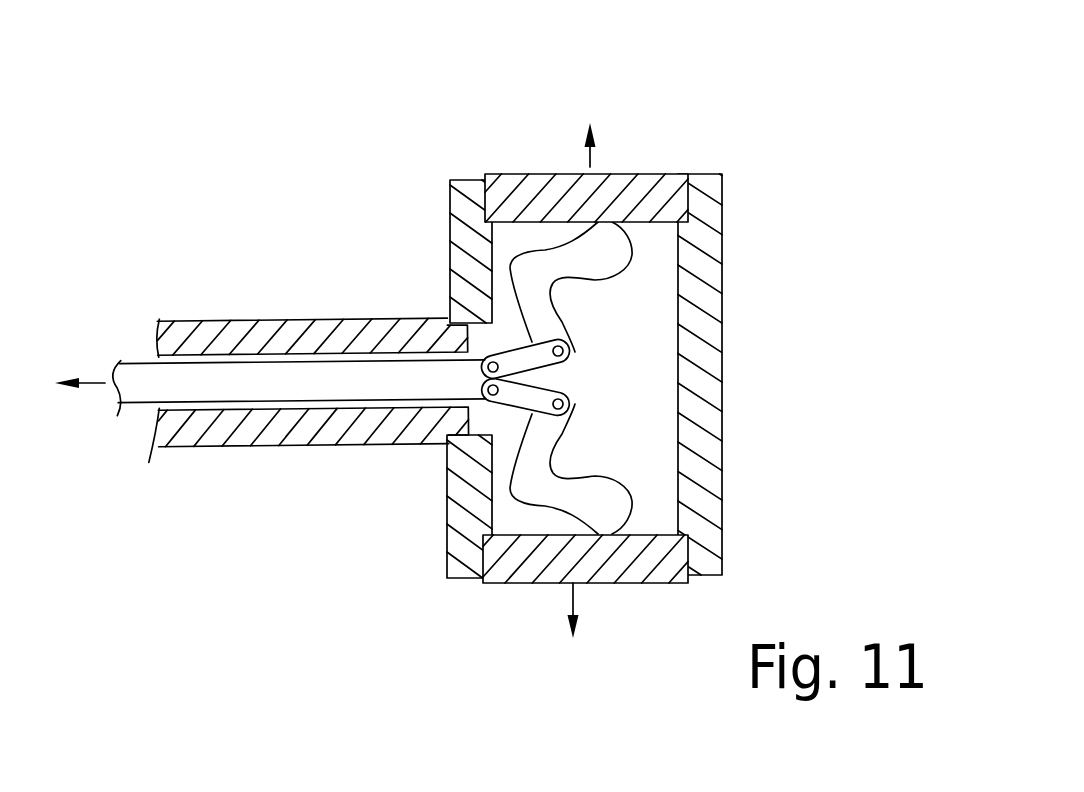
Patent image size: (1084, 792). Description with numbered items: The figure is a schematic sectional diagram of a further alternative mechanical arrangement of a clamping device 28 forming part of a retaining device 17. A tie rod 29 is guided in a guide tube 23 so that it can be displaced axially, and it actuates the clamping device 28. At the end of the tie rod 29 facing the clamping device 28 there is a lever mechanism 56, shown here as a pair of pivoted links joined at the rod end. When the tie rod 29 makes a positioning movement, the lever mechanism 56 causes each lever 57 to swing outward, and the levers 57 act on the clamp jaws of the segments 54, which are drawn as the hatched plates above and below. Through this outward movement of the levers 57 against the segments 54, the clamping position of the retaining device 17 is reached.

The retaining device 17 is at (488, 366).
The guide tube 23 is at (217, 432).
The clamping device 28 is at (738, 283).
The tie rod 29 is at (138, 385).
The segments 54 is at (645, 183).
The lever mechanism 56 is at (500, 412).
The lever 57 is at (562, 260).